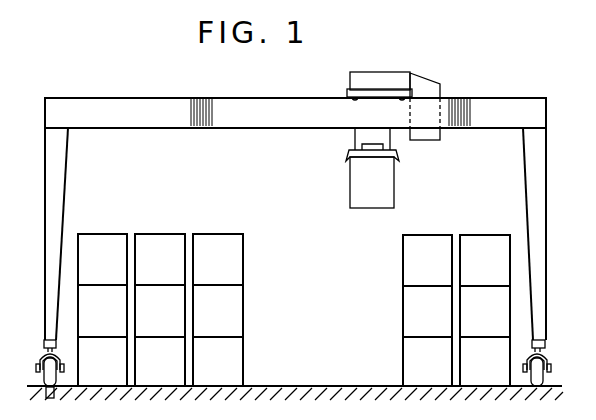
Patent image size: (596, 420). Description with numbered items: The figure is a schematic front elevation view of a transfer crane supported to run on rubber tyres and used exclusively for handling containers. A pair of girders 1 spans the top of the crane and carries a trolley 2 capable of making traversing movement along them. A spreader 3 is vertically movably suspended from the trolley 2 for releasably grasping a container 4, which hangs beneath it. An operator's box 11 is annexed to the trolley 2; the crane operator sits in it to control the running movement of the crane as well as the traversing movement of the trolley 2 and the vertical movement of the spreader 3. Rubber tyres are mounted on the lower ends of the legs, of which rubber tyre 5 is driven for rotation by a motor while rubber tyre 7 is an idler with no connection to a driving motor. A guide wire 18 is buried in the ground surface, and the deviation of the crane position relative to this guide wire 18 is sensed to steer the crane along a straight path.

The girders 1 is at (160, 98).
The trolley 2 is at (350, 81).
The spreader 3 is at (347, 157).
The container 4 is at (352, 191).
The rubber tyre 5 is at (46, 364).
The rubber tyre 7 is at (542, 364).
The operator's box 11 is at (440, 83).
The guide wire 18 is at (46, 394).